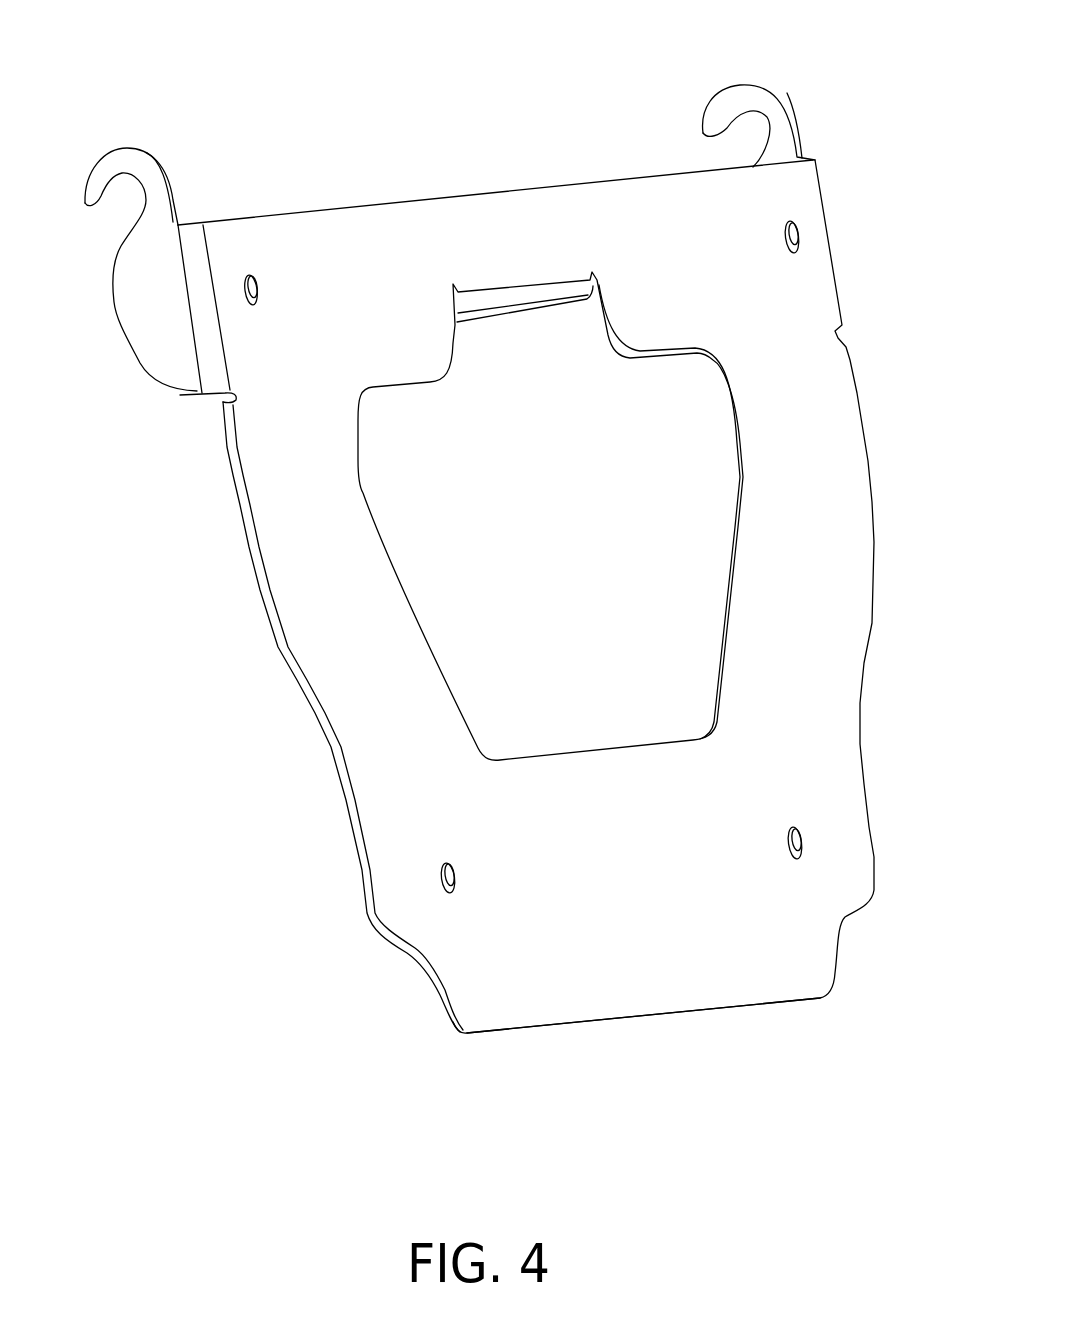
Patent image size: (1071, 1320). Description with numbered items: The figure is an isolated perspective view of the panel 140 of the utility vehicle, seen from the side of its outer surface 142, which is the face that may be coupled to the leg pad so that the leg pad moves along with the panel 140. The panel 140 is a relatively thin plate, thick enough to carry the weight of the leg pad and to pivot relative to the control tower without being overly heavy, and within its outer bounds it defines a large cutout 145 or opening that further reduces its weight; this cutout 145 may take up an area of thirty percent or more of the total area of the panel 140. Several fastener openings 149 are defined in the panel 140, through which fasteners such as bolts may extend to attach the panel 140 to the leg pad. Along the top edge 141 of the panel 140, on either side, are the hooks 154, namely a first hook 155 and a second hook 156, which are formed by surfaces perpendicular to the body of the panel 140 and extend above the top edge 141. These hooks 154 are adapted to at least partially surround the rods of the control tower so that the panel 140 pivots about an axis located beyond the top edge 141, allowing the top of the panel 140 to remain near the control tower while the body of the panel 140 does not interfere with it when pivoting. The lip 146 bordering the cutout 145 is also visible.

The panel 140 is at (367, 265).
The top edge 141 is at (565, 178).
The outer surface 142 is at (627, 890).
The cutout 145 is at (517, 540).
The flange of central opening 146 is at (525, 303).
The fastener openings 149 is at (250, 293).
The hooks 154 is at (141, 115).
The first hook 155 is at (123, 165).
The second hook 156 is at (777, 110).